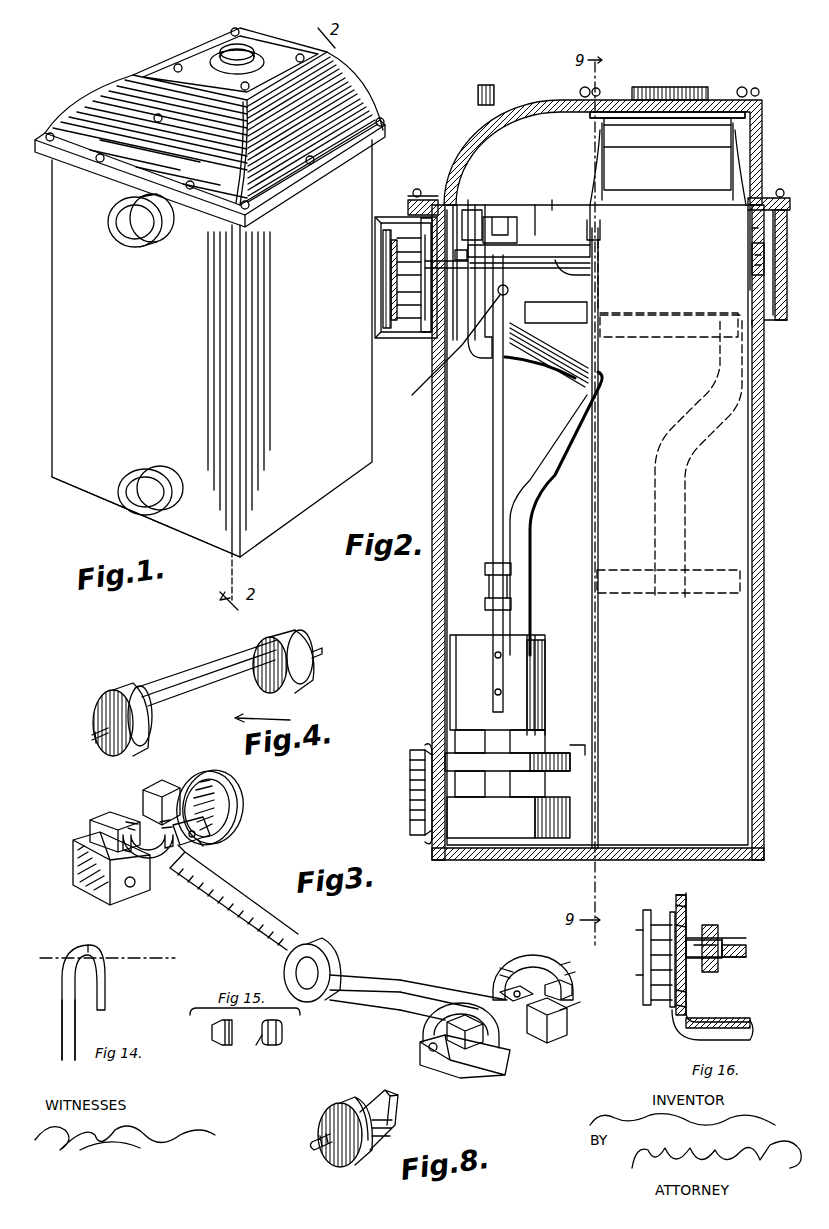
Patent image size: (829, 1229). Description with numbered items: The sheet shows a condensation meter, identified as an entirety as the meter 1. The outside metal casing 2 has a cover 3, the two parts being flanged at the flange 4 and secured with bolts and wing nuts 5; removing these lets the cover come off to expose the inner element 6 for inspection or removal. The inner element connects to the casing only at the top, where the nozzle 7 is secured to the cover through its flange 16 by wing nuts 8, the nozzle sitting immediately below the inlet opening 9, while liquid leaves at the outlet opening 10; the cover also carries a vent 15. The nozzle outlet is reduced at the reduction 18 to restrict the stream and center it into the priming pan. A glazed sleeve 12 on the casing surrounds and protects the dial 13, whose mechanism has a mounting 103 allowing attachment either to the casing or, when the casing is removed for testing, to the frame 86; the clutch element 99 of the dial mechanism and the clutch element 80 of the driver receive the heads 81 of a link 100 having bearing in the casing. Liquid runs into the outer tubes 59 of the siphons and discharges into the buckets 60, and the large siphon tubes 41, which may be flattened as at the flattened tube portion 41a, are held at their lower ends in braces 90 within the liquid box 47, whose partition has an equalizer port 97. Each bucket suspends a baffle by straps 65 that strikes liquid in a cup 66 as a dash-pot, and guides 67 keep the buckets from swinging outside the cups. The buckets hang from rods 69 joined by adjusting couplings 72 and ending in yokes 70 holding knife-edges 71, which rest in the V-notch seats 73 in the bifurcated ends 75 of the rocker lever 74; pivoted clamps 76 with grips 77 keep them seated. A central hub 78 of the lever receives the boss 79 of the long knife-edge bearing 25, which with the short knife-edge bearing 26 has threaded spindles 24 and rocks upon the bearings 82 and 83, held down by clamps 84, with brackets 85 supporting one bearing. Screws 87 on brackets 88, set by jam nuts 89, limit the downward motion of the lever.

In FIG. 1, the meter 1 is at (52, 205).
In FIG. 2, the meter 1 is at (432, 445).
In FIG. 1, the outside metal casing 2 is at (52, 350).
In FIG. 2, the outside metal casing 2 is at (432, 490).
In FIG. 1, the cover 3 is at (95, 110).
In FIG. 2, the cover 3 is at (470, 165).
In FIG. 1, the flange 4 is at (62, 160).
In FIG. 2, the flange 4 is at (408, 204).
In FIG. 1, the bolts and wing nuts 5 is at (50, 133).
In FIG. 2, the bolts and wing nuts 5 is at (420, 188).
In FIG. 2, the inner element 6 is at (552, 200).
In FIG. 2, the nozzle 7 is at (720, 110).
In FIG. 1, the wing nuts 8 is at (175, 65).
In FIG. 2, the wing nuts 8 is at (583, 90).
In FIG. 1, the inlet opening 9 is at (250, 52).
In FIG. 2, the inlet opening 9 is at (688, 87).
In FIG. 1, the outlet opening 10 is at (125, 512).
In FIG. 2, the outlet opening 10 is at (408, 790).
In FIG. 1, the sleeve 12 is at (128, 248).
In FIG. 2, the sleeve 12 is at (395, 337).
In FIG. 2, the dial 13 is at (412, 358).
In FIG. 16, the dial 13 is at (650, 1008).
In FIG. 2, the vent 15 is at (478, 92).
In FIG. 14, the vent 15 is at (98, 958).
In FIG. 1, the flange 16 is at (155, 115).
In FIG. 2, the flange 16 is at (590, 115).
In FIG. 3, the flange 16 is at (580, 1007).
In FIG. 2, the reduction 18 is at (615, 158).
In FIG. 4, the threaded spindles 24 is at (92, 736).
In FIG. 8, the threaded spindles 24 is at (314, 1142).
In FIG. 2, the long knife-edge bearing 25 is at (555, 245).
In FIG. 4, the long knife-edge bearing 25 is at (172, 692).
In FIG. 16, the long knife-edge bearing 25 is at (748, 945).
In FIG. 8, the short knife-edge bearing 26 is at (368, 1095).
In FIG. 2, the large siphon tubes 41 is at (620, 420).
In FIG. 14, the large siphon tubes 41 is at (108, 990).
In FIG. 15, the large siphon tubes 41 is at (264, 1032).
In FIG. 14, the flattened tube portion 41a is at (95, 950).
In FIG. 15, the flattened tube portion 41a is at (225, 1048).
In FIG. 2, the liquid box 47 is at (590, 538).
In FIG. 2, the outer tubes 59 is at (532, 490).
In FIG. 14, the outer tubes 59 is at (62, 1040).
In FIG. 15, the outer tubes 59 is at (212, 1028).
In FIG. 2, the buckets 60 is at (545, 690).
In FIG. 2, the straps 65 is at (560, 715).
In FIG. 2, the cup 66 is at (476, 840).
In FIG. 2, the guides 67 is at (440, 760).
In FIG. 2, the rods 69 is at (493, 445).
In FIG. 2, the yokes 70 is at (512, 215).
In FIG. 2, the knife-edges 71 is at (470, 212).
In FIG. 2, the couplings 72 is at (487, 587).
In FIG. 3, the seats 73 is at (156, 797).
In FIG. 3, the rocker lever 74 is at (238, 890).
In FIG. 3, the bifurcated ends 75 is at (102, 895).
In FIG. 2, the pivoted clamps 76 is at (535, 205).
In FIG. 3, the pivoted clamps 76 is at (238, 808).
In FIG. 3, the grips 77 is at (572, 992).
In FIG. 3, the hub 78 is at (330, 945).
In FIG. 16, the hub 78 is at (712, 927).
In FIG. 4, the boss 79 is at (290, 635).
In FIG. 16, the boss 79 is at (725, 933).
In FIG. 4, the clutch element 80 is at (323, 650).
In FIG. 16, the clutch element 80 is at (700, 940).
In FIG. 2, the heads of link 81 is at (448, 305).
In FIG. 2, the bearing 82 is at (592, 272).
In FIG. 2, the bearing 83 is at (752, 262).
In FIG. 2, the clamps 84 is at (598, 233).
In FIG. 2, the brackets 85 is at (590, 300).
In FIG. 2, the frame 86 is at (480, 362).
In FIG. 16, the frame 86 is at (752, 1030).
In FIG. 2, the screws 87 is at (454, 348).
In FIG. 2, the brackets 88 is at (590, 370).
In FIG. 2, the jam nuts 89 is at (512, 340).
In FIG. 2, the braces 90 is at (620, 575).
In FIG. 2, the equalizer port 97 is at (680, 312).
In FIG. 2, the clutch element 99 is at (440, 262).
In FIG. 16, the clutch element 99 is at (686, 945).
In FIG. 2, the link 100 is at (447, 272).
In FIG. 2, the mounting 103 is at (425, 335).
In FIG. 16, the mounting 103 is at (676, 1015).